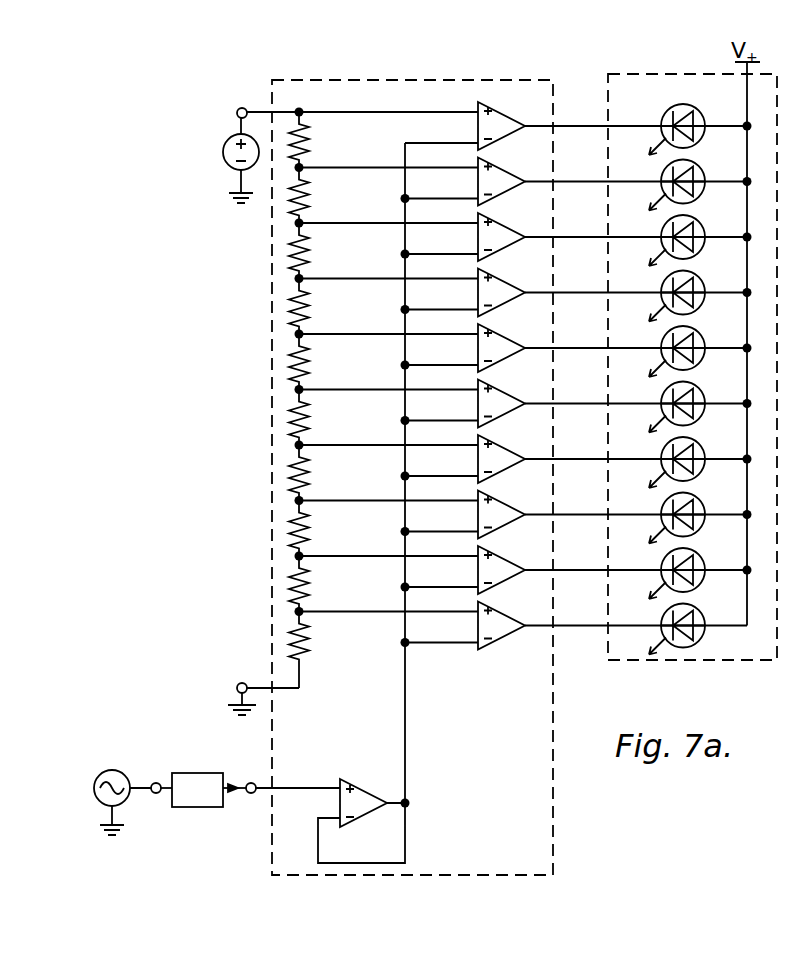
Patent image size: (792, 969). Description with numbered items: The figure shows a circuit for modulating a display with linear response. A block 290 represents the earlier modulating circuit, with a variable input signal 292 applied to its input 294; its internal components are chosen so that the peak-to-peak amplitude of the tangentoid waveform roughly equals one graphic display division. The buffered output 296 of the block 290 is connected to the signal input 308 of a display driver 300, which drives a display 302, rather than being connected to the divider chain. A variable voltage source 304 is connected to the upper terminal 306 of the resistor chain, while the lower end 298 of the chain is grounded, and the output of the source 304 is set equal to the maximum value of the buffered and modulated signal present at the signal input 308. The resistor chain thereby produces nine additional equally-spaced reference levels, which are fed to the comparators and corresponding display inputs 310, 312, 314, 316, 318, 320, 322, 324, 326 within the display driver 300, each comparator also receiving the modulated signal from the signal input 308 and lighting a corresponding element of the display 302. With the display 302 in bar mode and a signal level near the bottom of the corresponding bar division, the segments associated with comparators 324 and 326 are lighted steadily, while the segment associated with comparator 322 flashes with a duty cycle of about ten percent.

The block 290 is at (196, 773).
The variable input signal 292 is at (130, 752).
The input 294 is at (156, 794).
The buffered output 296 is at (238, 795).
The lower end 298 is at (245, 683).
The display driver 300 is at (501, 79).
The display 302 is at (666, 60).
The variable voltage source 304 is at (226, 166).
The upper terminal 306 is at (241, 108).
The signal input 308 is at (253, 794).
The comparator 310 is at (348, 166).
The comparator 312 is at (348, 222).
The comparator 314 is at (348, 277).
The comparator 316 is at (348, 332).
The comparator 318 is at (348, 388).
The comparator 320 is at (348, 444).
The comparator 322 is at (348, 499).
The comparator 324 is at (348, 554).
The comparator 326 is at (348, 610).